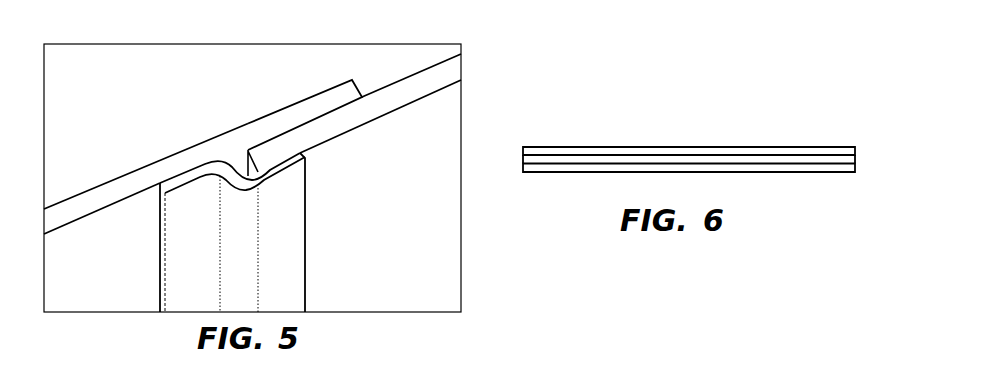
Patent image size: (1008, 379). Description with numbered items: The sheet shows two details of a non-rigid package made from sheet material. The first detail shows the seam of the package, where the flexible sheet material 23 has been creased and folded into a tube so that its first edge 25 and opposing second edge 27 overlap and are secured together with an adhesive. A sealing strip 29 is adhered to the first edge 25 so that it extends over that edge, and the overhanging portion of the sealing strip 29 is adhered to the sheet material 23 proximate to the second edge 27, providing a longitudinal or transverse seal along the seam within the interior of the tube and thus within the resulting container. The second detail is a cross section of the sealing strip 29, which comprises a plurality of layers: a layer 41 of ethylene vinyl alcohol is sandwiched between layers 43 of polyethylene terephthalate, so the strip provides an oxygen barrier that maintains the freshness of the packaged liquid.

In FIG. 5, the flexible sheet material 23 is at (397, 224).
In FIG. 5, the first edge 25 is at (232, 156).
In FIG. 5, the second edge 27 is at (368, 78).
In FIG. 5, the sealing strip 29 is at (182, 257).
In FIG. 6, the sealing strip 29 is at (699, 140).
In FIG. 6, the layer of EVOH 41 is at (795, 158).
In FIG. 6, the layers of PET 43 is at (666, 163).